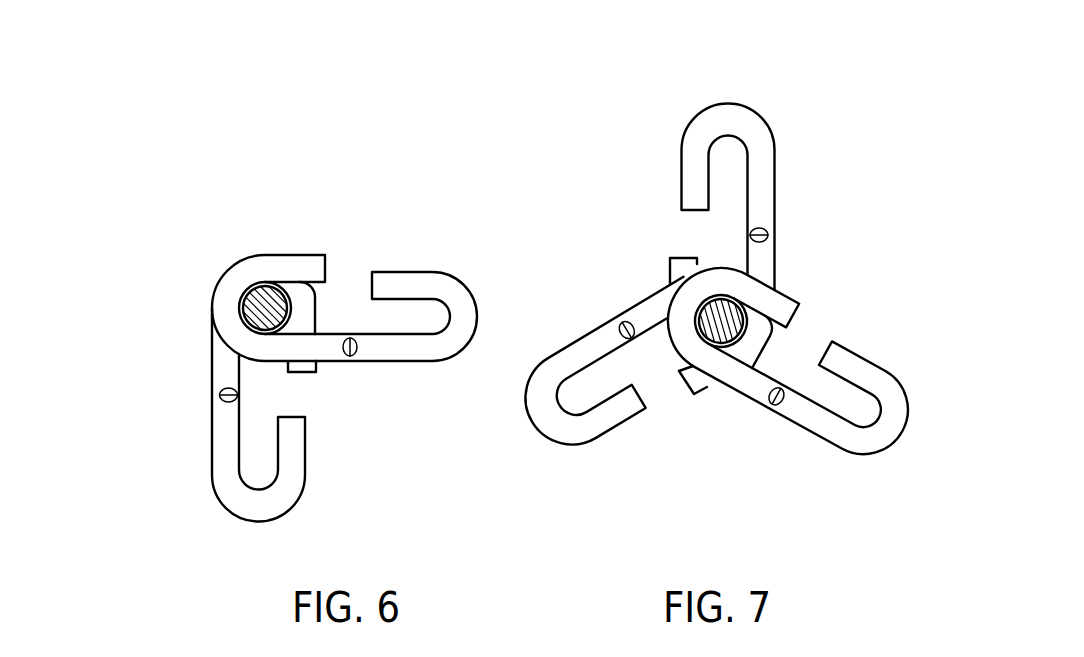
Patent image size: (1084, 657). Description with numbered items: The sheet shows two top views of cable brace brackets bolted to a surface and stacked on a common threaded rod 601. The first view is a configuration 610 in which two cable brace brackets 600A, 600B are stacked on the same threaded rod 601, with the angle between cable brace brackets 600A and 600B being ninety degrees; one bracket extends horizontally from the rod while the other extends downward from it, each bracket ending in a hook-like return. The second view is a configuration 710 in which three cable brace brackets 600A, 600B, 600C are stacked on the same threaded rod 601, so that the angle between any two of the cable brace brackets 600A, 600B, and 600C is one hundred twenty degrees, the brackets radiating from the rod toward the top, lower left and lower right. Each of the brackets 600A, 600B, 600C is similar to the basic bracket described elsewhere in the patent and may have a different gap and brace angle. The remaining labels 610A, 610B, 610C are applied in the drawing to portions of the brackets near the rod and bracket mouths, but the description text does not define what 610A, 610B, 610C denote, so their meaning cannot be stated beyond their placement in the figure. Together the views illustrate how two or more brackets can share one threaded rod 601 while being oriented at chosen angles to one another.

In FIG. 6, the configuration 610 is at (158, 142).
In FIG. 7, the configuration 710 is at (571, 51).
In FIG. 6, the cable brace bracket 600A is at (281, 233).
In FIG. 7, the cable brace bracket 600A is at (711, 91).
In FIG. 6, the cable brace bracket 600B is at (178, 402).
In FIG. 7, the cable brace bracket 600C is at (626, 289).
In FIG. 6, the threaded rod 601 is at (216, 298).
In FIG. 7, the threaded rod 601 is at (702, 303).
In FIG. 6, the first hook engagement portion 610A is at (191, 280).
In FIG. 7, the first hook engagement portion 610A is at (683, 271).
In FIG. 6, the second hook engagement portion 610B is at (351, 272).
In FIG. 7, the second hook engagement portion 610B is at (826, 310).
In FIG. 7, the third hook engagement portion 610C is at (688, 414).